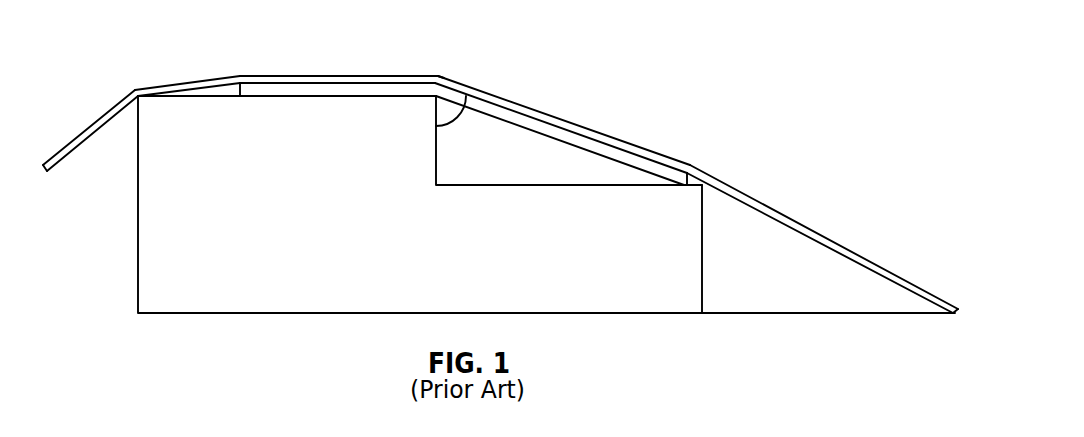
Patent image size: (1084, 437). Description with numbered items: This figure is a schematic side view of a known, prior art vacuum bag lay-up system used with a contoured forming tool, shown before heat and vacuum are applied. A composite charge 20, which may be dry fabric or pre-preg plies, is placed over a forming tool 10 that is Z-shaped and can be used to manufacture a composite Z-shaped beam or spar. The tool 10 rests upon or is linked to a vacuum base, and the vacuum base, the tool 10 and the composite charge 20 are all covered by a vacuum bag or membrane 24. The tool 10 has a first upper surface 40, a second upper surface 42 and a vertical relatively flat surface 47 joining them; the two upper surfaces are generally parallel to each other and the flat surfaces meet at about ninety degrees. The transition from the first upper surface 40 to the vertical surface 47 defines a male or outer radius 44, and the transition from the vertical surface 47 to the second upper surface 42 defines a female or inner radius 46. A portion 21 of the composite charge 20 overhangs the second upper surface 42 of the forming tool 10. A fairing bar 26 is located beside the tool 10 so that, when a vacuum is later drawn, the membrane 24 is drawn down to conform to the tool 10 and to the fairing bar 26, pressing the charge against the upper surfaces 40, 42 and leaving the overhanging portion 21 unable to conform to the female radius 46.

The forming tool 10 is at (248, 250).
The composite charge 20 is at (333, 86).
The overhanging portion of the composite charge 21 is at (558, 130).
The vacuum bag 24 is at (82, 134).
The fairing bar 26 is at (768, 237).
The first upper surface 40 is at (217, 95).
The second upper surface 42 is at (583, 185).
The outer radius 44 is at (440, 86).
The inner radius 46 is at (436, 185).
The vertical relatively flat surface 47 is at (478, 98).